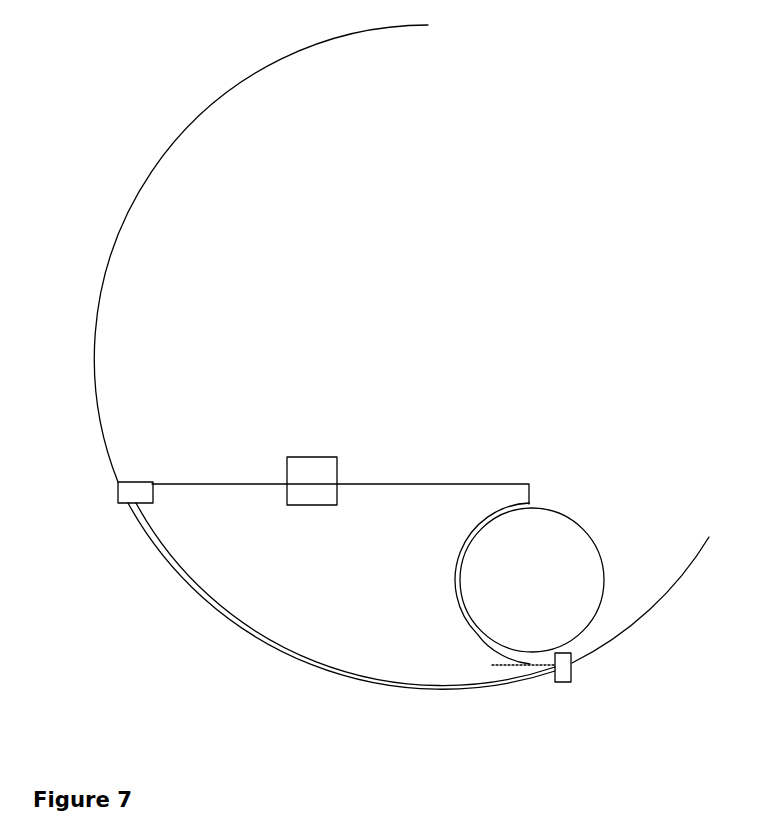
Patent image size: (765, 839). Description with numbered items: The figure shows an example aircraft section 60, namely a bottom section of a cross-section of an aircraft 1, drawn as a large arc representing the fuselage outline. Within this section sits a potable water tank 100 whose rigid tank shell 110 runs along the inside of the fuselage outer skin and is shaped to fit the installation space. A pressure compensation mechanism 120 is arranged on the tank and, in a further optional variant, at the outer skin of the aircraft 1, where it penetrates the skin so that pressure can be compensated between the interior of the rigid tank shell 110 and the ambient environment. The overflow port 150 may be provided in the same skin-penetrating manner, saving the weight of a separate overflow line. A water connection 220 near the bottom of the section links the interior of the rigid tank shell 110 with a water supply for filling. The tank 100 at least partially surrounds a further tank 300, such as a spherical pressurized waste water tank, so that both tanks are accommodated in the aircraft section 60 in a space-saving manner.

The aircraft 1 is at (630, 623).
The aircraft section 60 is at (545, 118).
The potable water tank 100 is at (340, 437).
The rigid tank shell 110 is at (237, 483).
The pressure compensation mechanism 120 is at (312, 456).
The overflow port 150 is at (118, 493).
The water connection 220 is at (560, 683).
The further tank 300 is at (566, 523).